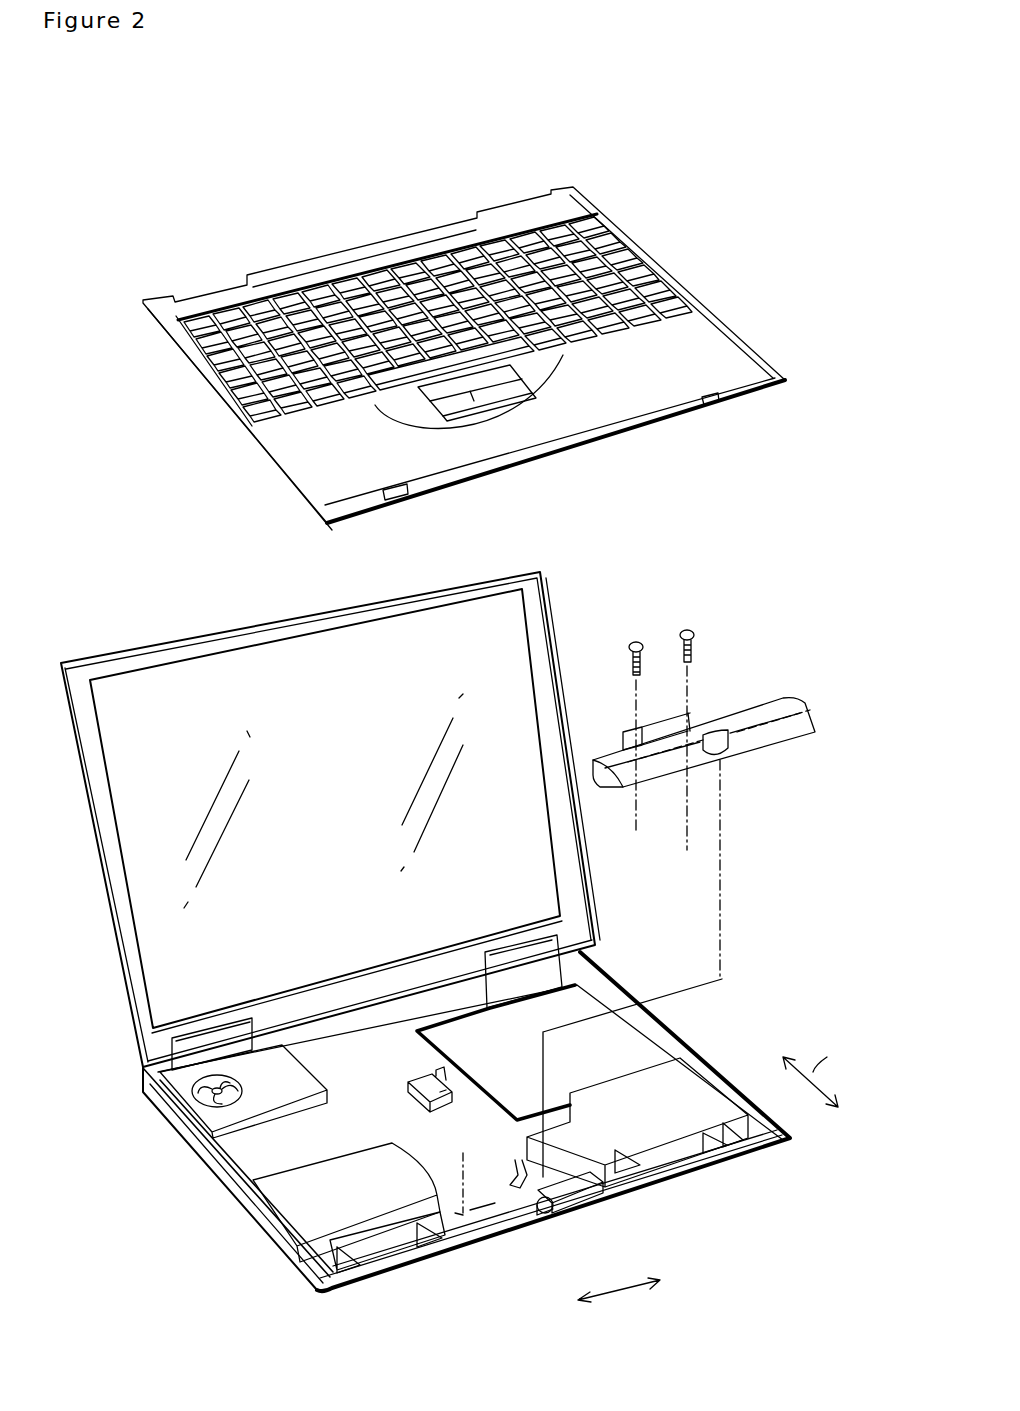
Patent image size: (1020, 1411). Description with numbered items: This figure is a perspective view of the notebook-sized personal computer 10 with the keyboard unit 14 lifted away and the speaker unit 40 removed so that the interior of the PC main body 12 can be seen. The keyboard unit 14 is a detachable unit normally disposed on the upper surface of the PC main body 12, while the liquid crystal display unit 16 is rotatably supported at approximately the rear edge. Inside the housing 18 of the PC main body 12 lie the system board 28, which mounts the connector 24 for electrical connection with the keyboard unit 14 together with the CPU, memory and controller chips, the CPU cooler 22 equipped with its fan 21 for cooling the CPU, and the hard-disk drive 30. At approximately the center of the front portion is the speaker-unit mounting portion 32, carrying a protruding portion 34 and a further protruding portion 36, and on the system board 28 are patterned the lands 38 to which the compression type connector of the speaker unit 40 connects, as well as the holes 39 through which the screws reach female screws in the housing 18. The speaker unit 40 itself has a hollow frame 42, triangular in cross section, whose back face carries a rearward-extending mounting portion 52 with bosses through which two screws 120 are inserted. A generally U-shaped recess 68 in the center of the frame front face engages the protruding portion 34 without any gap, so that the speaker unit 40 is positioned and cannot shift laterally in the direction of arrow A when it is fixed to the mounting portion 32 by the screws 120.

The notebook-sized personal computer 10 is at (713, 186).
The PC main body 12 is at (724, 1057).
The keyboard unit 14 is at (632, 240).
The liquid crystal display unit 16 is at (470, 586).
The housing 18 is at (298, 1265).
The fan 21 is at (210, 1088).
The CPU cooler 22 is at (195, 1110).
The connector 24 is at (413, 1075).
The system board 28 is at (257, 1177).
The hard-disk drive 30 is at (288, 1218).
The speaker-unit mounting portion 32 is at (540, 1212).
The protruding portion 34 is at (523, 1197).
The protruding portion 36 is at (603, 1200).
The lands 38 is at (507, 1187).
The holes 39 is at (460, 1208).
The speaker unit 40 is at (740, 701).
The frame 42 is at (787, 703).
The mounting portion 52 is at (628, 727).
The U-shaped recess 68 is at (722, 752).
The screws 120 is at (633, 640).